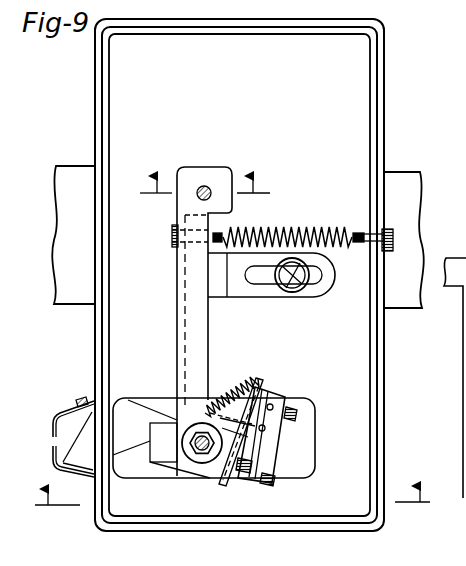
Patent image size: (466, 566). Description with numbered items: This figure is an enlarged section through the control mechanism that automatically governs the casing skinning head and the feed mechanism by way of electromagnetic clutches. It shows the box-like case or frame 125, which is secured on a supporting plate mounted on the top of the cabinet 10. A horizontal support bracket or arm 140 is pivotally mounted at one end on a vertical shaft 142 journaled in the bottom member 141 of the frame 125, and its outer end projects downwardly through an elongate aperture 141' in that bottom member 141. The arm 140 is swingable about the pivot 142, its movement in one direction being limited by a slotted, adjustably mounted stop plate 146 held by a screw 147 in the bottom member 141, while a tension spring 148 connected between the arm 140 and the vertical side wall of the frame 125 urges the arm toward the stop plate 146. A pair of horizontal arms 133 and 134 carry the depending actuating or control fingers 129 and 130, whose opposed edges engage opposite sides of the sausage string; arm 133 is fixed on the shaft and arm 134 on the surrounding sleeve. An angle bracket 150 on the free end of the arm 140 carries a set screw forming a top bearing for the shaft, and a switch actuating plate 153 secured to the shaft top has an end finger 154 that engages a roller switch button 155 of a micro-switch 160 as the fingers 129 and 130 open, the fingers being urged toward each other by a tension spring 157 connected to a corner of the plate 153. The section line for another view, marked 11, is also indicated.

The cabinet 10 is at (232, 509).
The section line 11- 11 is at (203, 184).
The box-like case or frame 125 is at (378, 343).
The actuating or control finger 129 is at (53, 423).
The actuating or control finger 130 is at (53, 453).
The horizontal arm 133 is at (88, 474).
The horizontal arm 134 is at (82, 403).
The horizontal support bracket or arm 140 is at (182, 333).
The bottom member 141 is at (237, 275).
The elongate aperture 141' is at (233, 385).
The vertical shaft 142 is at (207, 186).
The slotted adjustably mounted stop plate 146 is at (242, 298).
The screw 147 is at (302, 292).
The tension spring 148 is at (290, 230).
The angle bracket 150 is at (163, 427).
The switch actuating plate 153 is at (208, 464).
The end finger 154 is at (250, 462).
The roller switch button 155 is at (258, 484).
The tension spring 157 is at (262, 380).
The micro-switch 160 is at (283, 425).